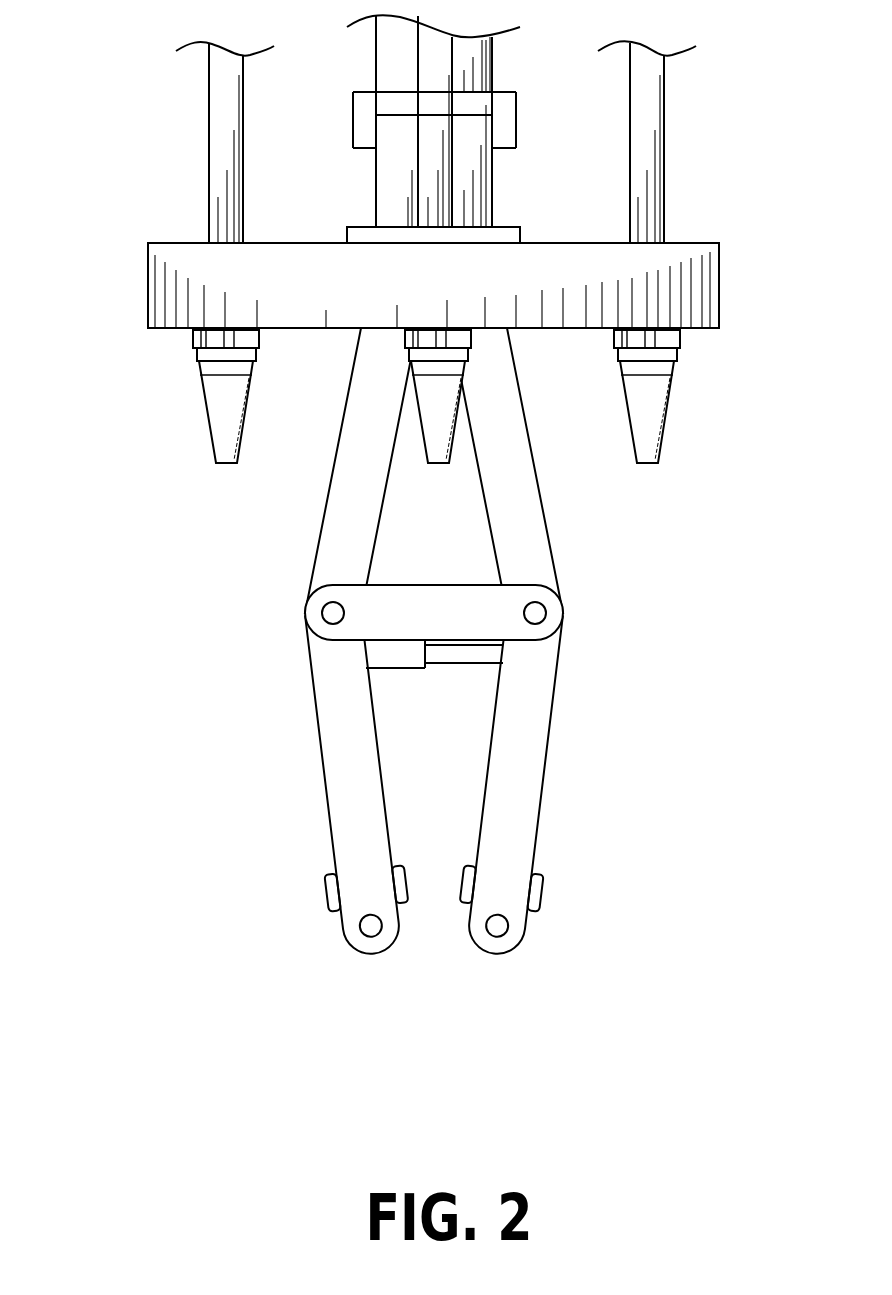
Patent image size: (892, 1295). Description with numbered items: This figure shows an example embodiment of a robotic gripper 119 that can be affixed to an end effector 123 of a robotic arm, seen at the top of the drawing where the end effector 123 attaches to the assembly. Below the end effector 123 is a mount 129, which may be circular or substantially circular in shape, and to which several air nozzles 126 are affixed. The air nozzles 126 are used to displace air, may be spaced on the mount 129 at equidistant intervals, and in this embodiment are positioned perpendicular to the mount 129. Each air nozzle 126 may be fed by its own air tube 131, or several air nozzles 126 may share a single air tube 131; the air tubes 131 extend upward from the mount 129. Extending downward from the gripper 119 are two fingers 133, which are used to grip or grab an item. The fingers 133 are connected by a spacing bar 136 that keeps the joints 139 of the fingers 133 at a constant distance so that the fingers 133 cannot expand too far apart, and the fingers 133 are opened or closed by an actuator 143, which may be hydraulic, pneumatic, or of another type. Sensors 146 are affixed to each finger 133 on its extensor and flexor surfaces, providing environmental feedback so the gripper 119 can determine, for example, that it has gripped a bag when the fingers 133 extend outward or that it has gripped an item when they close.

The gripper 119 is at (177, 980).
The end effector 123 is at (352, 117).
The air nozzles 126 is at (200, 398).
The mount 129 is at (723, 288).
The air tube 131 is at (207, 153).
The fingers 133 is at (315, 697).
The spacing bar 136 is at (414, 625).
The joints 139 is at (303, 608).
The actuator 143 is at (442, 672).
The sensors 146 is at (458, 887).